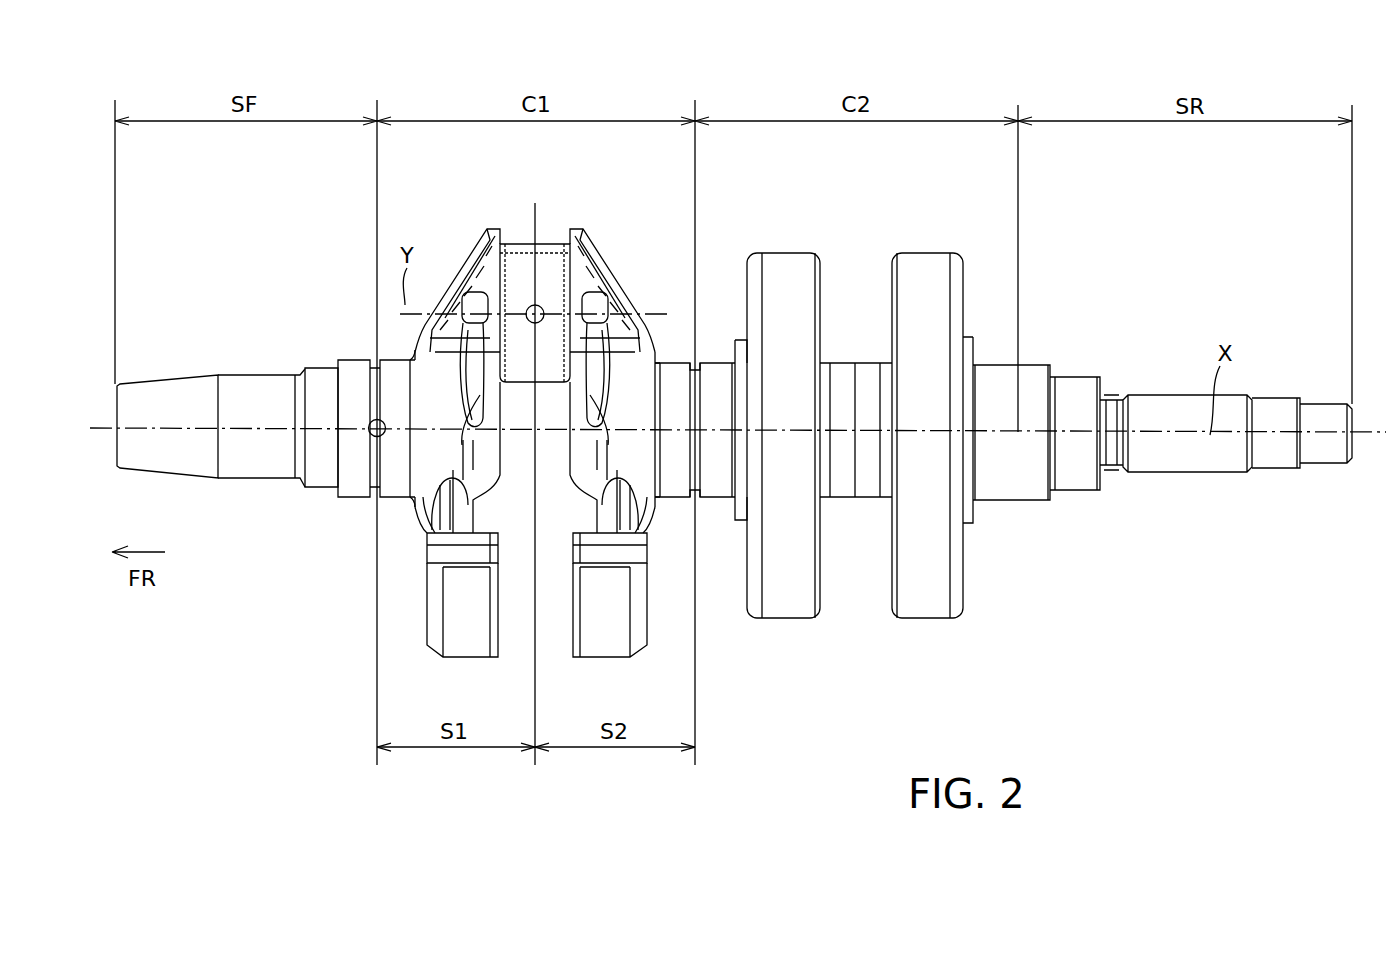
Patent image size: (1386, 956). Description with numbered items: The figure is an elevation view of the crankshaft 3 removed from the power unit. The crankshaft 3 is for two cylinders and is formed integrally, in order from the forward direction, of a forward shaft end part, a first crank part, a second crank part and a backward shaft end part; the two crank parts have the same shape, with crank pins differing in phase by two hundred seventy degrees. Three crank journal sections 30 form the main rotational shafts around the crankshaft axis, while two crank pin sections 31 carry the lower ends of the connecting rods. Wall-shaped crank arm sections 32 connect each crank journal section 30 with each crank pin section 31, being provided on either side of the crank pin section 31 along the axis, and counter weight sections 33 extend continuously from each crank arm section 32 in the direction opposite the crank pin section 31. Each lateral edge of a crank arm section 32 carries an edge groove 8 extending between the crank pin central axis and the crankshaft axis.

The crankshaft 3 is at (687, 200).
The edge groove 8 is at (483, 392).
The crank journal section 30 is at (367, 345).
The crank pin section 31 is at (553, 236).
The crank arm section 32 is at (445, 297).
The counter weight section 33 is at (470, 658).